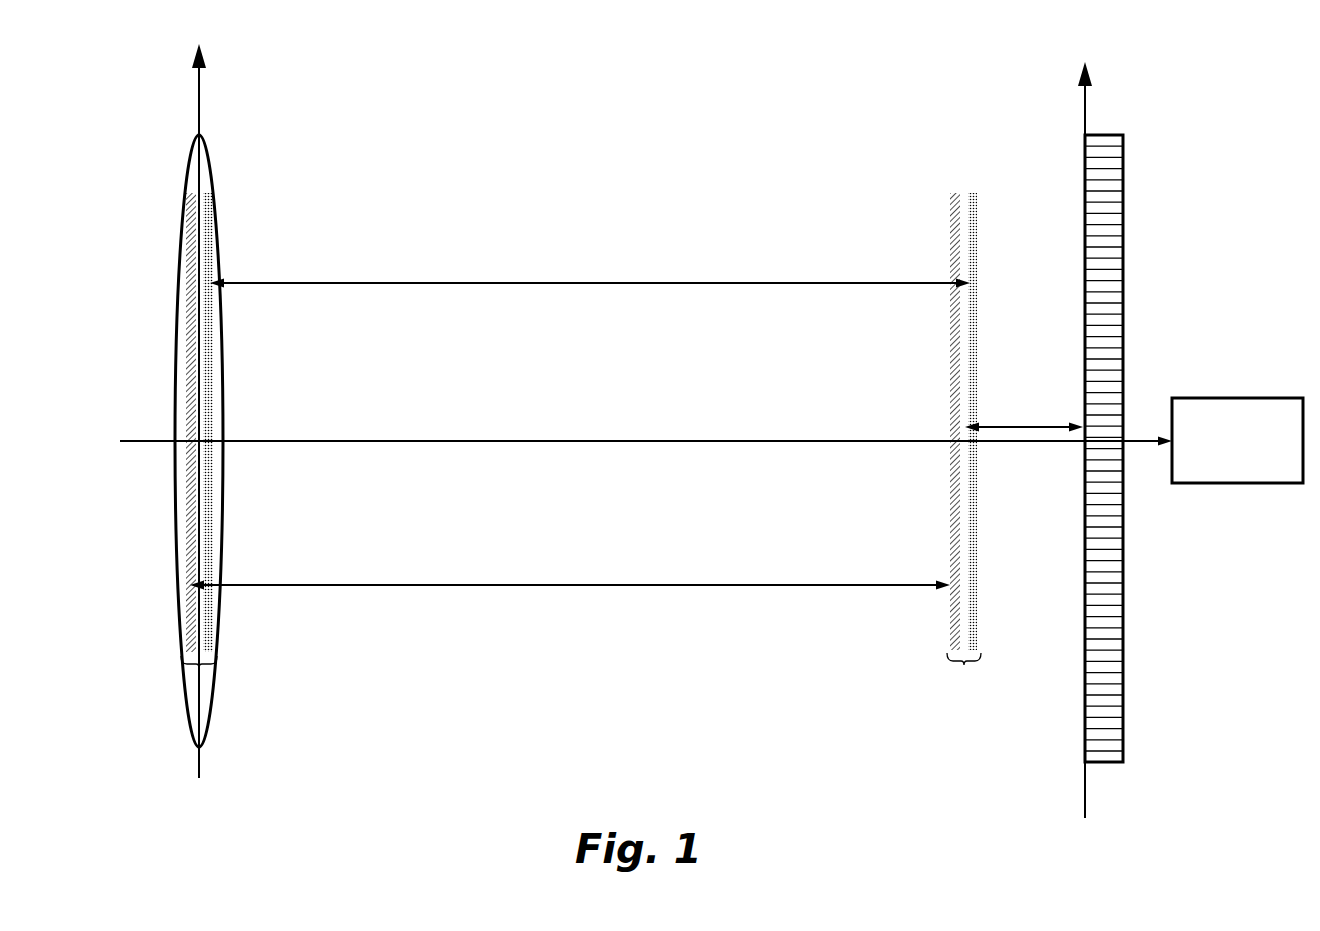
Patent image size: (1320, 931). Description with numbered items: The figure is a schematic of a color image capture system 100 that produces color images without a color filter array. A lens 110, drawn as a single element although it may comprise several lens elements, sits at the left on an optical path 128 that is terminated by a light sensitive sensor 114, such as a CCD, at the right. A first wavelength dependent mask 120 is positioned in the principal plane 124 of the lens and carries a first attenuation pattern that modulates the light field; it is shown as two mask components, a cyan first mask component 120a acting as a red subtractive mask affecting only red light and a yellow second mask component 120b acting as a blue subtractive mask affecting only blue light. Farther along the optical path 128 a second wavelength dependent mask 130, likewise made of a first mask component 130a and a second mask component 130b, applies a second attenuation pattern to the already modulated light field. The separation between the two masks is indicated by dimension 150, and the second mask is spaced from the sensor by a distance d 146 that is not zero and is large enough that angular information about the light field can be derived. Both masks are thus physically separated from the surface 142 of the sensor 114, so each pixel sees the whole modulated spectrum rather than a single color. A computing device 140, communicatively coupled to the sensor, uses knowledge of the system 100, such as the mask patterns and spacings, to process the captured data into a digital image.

The color image capture system 100 is at (862, 96).
The principal plane 124 is at (200, 75).
The lens 110 is at (207, 147).
The first wavelength dependent mask 120 is at (205, 416).
The first mask component 120a is at (188, 177).
The second mask component 120b is at (208, 177).
The distance between lens and aperture stop 150 is at (573, 283).
The optical path 128 is at (573, 441).
The second wavelength dependent mask 130 is at (968, 419).
The first mask component 130a is at (958, 191).
The second mask component 130b is at (970, 191).
The distance d 146 is at (1018, 425).
The computing device 140 is at (1220, 455).
The surface of the sensor 142 is at (1085, 696).
The light sensitive sensor 114 is at (1106, 763).